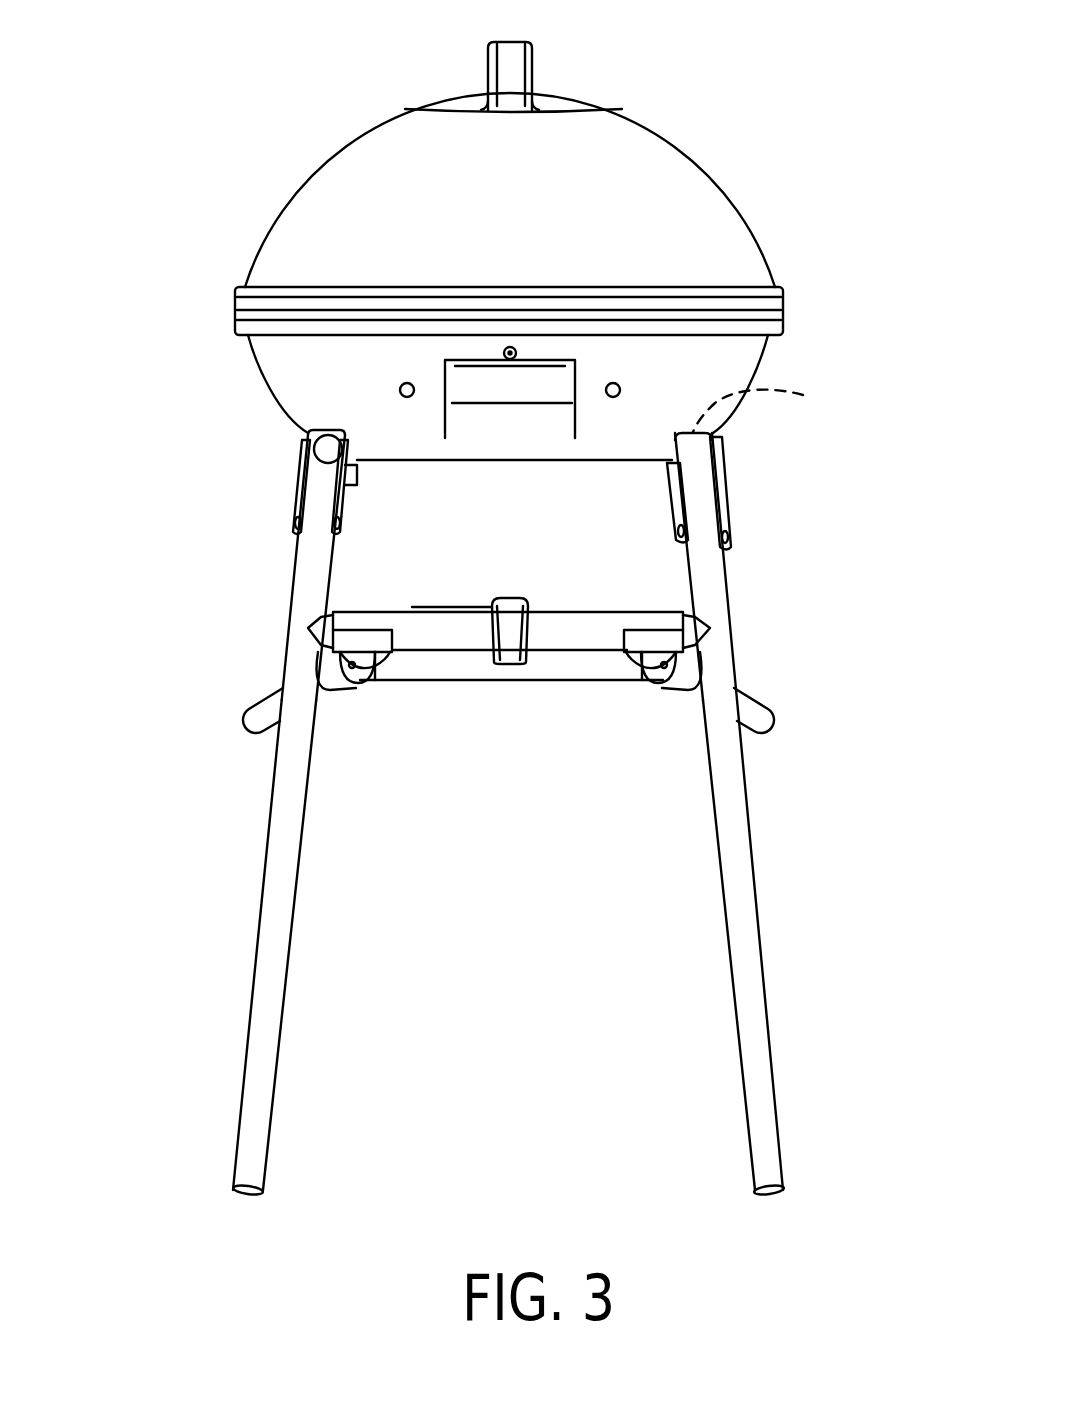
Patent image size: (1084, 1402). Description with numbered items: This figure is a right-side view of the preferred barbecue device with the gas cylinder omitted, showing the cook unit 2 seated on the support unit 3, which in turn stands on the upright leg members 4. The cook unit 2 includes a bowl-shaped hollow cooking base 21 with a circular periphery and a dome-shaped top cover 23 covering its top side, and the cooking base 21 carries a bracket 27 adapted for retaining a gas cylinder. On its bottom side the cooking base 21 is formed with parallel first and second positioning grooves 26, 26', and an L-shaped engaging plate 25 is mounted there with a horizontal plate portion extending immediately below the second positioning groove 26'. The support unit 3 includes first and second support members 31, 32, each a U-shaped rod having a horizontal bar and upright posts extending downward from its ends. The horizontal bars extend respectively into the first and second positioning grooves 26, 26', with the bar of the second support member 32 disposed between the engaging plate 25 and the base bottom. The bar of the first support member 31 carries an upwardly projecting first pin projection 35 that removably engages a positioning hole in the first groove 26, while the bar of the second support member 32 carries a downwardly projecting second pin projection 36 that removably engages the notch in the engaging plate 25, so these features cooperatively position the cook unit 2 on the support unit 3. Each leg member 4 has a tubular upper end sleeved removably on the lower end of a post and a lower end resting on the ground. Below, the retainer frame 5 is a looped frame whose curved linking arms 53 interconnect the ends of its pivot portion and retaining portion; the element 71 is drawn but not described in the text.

The cook unit 2 is at (657, 107).
The top cover 23 is at (650, 165).
The cooking base 21 is at (732, 368).
The bracket 27 is at (468, 363).
The support unit 3 is at (724, 570).
The first support member 31 is at (700, 505).
The second support member 32 is at (308, 585).
The slot 71 is at (298, 476).
The second pin projection 36 is at (298, 487).
The second positioning groove 26' is at (265, 456).
The engaging plate 25 is at (358, 468).
The first positioning groove 26 is at (767, 493).
The first pin projection 35 is at (770, 407).
The leg member 4 is at (275, 913).
The linking arm 53 is at (255, 723).
The retainer frame 5 is at (427, 651).